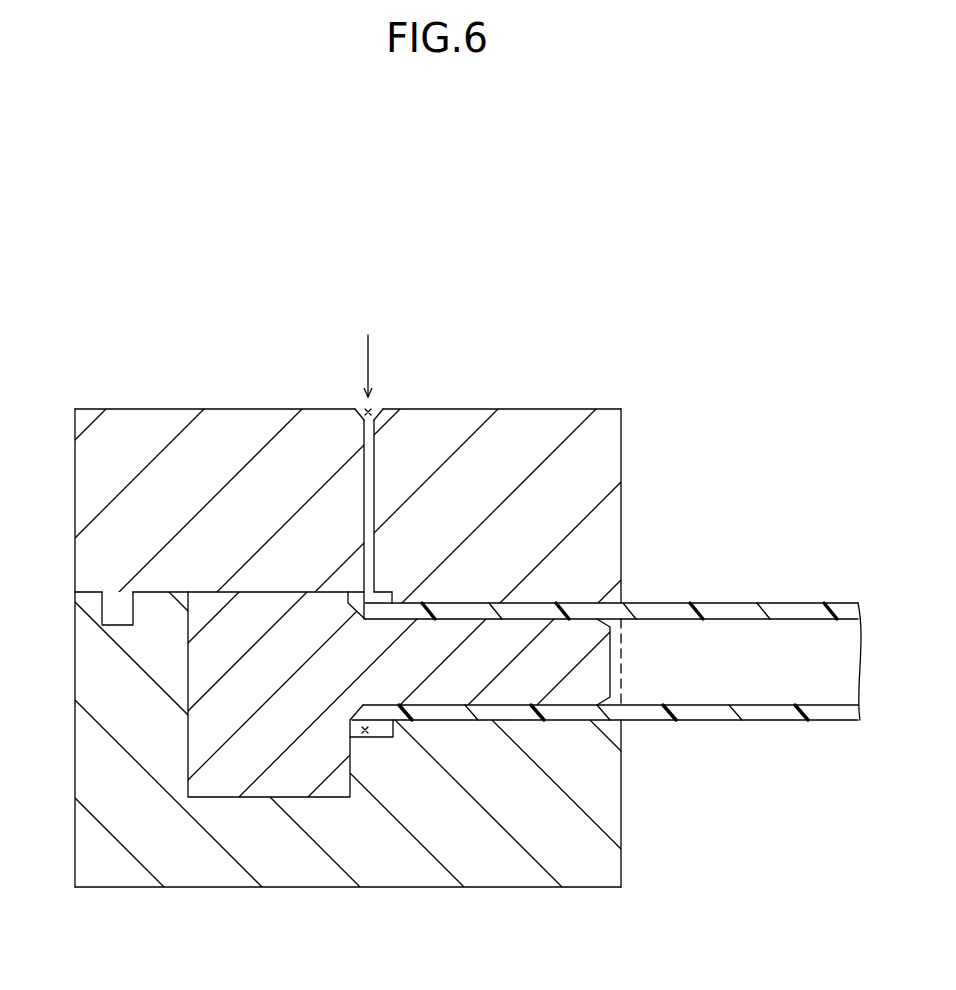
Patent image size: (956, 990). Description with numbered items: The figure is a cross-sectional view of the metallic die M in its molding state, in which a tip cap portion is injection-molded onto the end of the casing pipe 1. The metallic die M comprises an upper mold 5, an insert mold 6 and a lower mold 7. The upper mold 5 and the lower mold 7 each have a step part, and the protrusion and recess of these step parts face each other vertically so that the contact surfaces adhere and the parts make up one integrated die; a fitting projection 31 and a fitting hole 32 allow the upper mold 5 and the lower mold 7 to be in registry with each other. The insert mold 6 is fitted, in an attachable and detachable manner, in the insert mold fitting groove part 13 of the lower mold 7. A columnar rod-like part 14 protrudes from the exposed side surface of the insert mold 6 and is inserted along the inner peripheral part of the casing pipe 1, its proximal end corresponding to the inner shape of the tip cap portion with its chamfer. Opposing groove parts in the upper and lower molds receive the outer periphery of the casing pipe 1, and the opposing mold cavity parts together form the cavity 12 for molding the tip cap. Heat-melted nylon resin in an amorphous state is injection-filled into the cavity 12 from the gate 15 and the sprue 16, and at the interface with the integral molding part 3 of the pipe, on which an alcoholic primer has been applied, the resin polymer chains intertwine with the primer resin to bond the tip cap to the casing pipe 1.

The metallic die M is at (121, 386).
The casing pipe 1 is at (735, 603).
The integral molding part 3 is at (393, 585).
The upper mold 5 is at (515, 432).
The insert mold 6 is at (272, 775).
The lower mold 7 is at (601, 781).
The cavity 12 is at (368, 737).
The insert mold fitting groove part 13 is at (188, 740).
The rod-like part 14 is at (597, 658).
The gate 15 is at (360, 410).
The sprue 16 is at (376, 468).
The fitting projection 31 is at (120, 606).
The fitting hole 32 is at (105, 612).